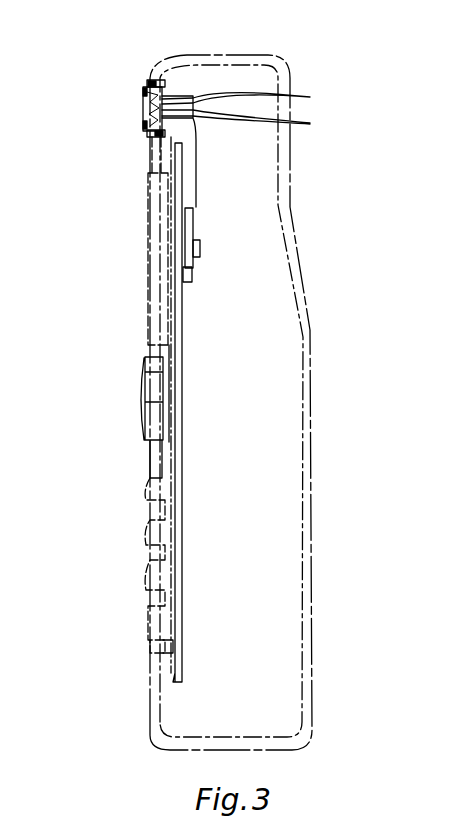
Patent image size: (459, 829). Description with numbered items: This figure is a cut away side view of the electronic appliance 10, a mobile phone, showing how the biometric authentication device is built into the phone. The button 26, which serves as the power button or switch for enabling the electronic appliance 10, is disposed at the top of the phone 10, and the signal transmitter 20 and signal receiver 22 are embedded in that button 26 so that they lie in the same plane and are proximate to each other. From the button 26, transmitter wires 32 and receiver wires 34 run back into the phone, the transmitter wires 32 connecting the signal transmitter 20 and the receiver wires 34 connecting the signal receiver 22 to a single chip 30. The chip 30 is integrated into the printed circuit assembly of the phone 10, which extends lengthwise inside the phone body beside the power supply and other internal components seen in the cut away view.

The electronic appliance 10 is at (327, 256).
The signal transmitter 20 is at (146, 93).
The signal receiver 22 is at (147, 121).
The button 26 is at (150, 82).
The chip 30 is at (190, 263).
The transmitter wires 32 is at (251, 98).
The receiver wires 34 is at (251, 124).